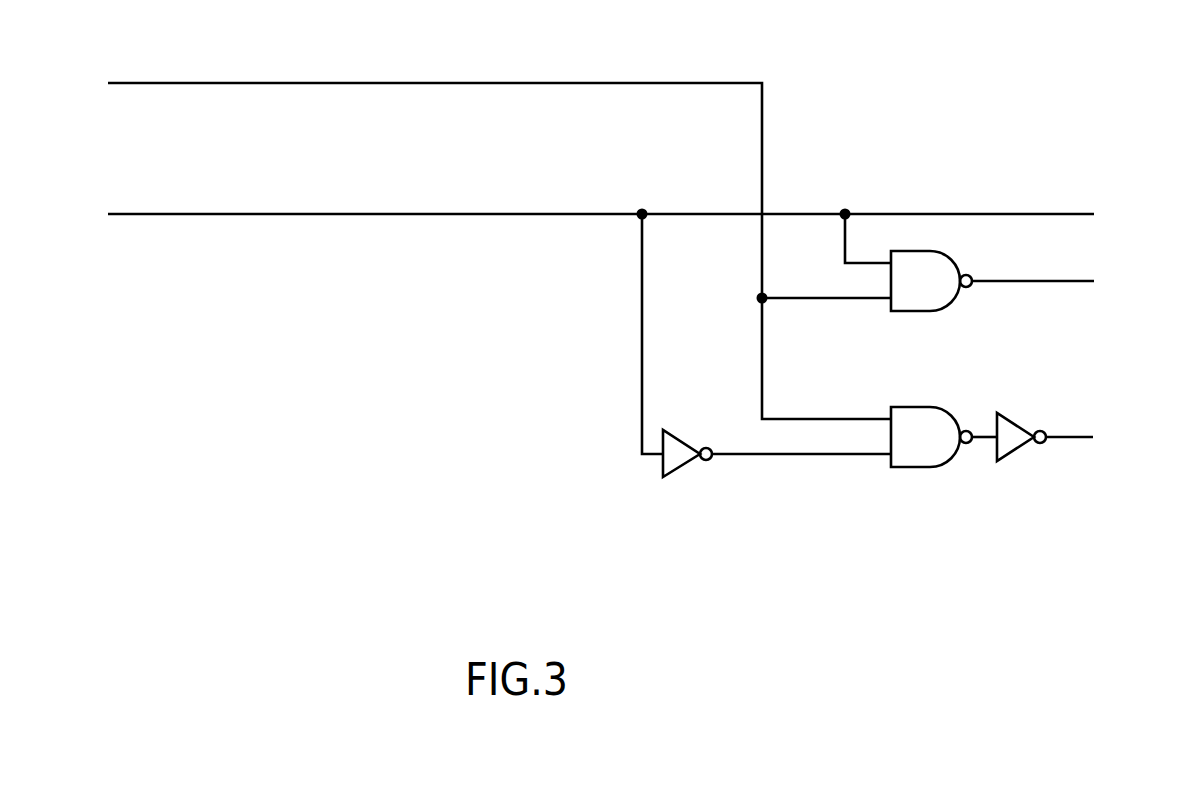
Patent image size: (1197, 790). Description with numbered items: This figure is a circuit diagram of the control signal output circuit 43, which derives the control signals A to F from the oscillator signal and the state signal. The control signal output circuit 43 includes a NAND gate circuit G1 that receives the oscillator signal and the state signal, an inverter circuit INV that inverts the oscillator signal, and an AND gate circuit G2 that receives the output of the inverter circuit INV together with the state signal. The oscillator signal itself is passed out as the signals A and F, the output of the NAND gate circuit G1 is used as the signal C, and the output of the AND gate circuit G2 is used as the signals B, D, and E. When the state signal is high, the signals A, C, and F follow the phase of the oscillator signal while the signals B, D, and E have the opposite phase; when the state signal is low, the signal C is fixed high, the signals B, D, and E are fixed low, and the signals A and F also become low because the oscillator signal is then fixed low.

The control signal output circuit 43 is at (1094, 26).
The NAND gate circuit G1 is at (948, 310).
The AND gate circuit G2 is at (976, 470).
The inverter circuit INV is at (682, 468).